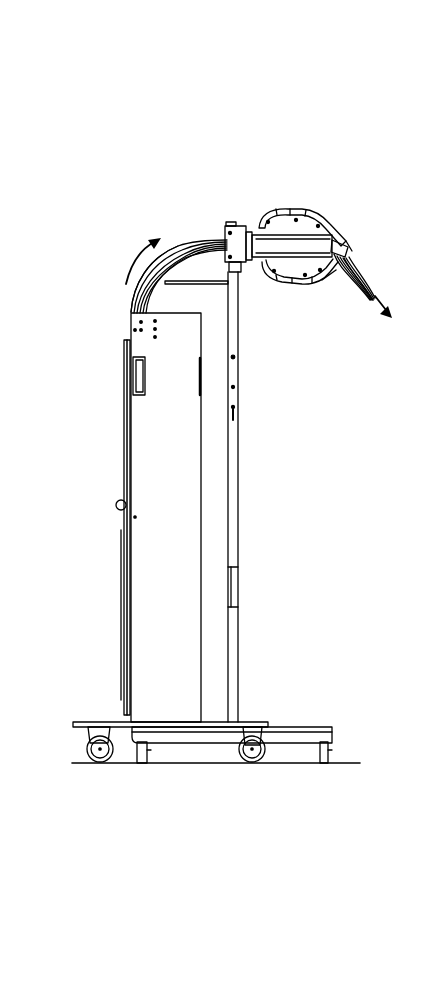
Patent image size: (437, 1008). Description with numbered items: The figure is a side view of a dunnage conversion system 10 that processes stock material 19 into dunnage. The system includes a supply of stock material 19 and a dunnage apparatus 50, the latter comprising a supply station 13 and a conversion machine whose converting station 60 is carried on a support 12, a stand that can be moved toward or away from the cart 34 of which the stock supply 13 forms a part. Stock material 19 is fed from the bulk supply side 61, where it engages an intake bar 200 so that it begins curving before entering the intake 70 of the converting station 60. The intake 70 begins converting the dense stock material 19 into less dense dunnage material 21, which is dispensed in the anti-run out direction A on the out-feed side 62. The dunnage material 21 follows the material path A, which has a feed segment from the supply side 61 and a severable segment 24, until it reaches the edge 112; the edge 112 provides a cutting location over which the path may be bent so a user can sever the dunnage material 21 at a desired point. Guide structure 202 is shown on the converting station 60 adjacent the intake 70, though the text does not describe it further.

The dunnage conversion system 10 is at (91, 198).
The support 12 is at (234, 489).
The supply station 13 is at (170, 447).
The stock material 19 is at (130, 305).
The dunnage material 21 is at (350, 292).
The severable segment 24 is at (377, 292).
The cart 34 is at (252, 722).
The dunnage apparatus 50 is at (390, 84).
The converting station 60 is at (333, 145).
The supply side 61 is at (114, 303).
The out-feed side 62 is at (383, 326).
The intake 70 is at (232, 228).
The edge 112 is at (333, 278).
The intake bar 200 is at (180, 221).
The hose guide bands 202 is at (355, 207).